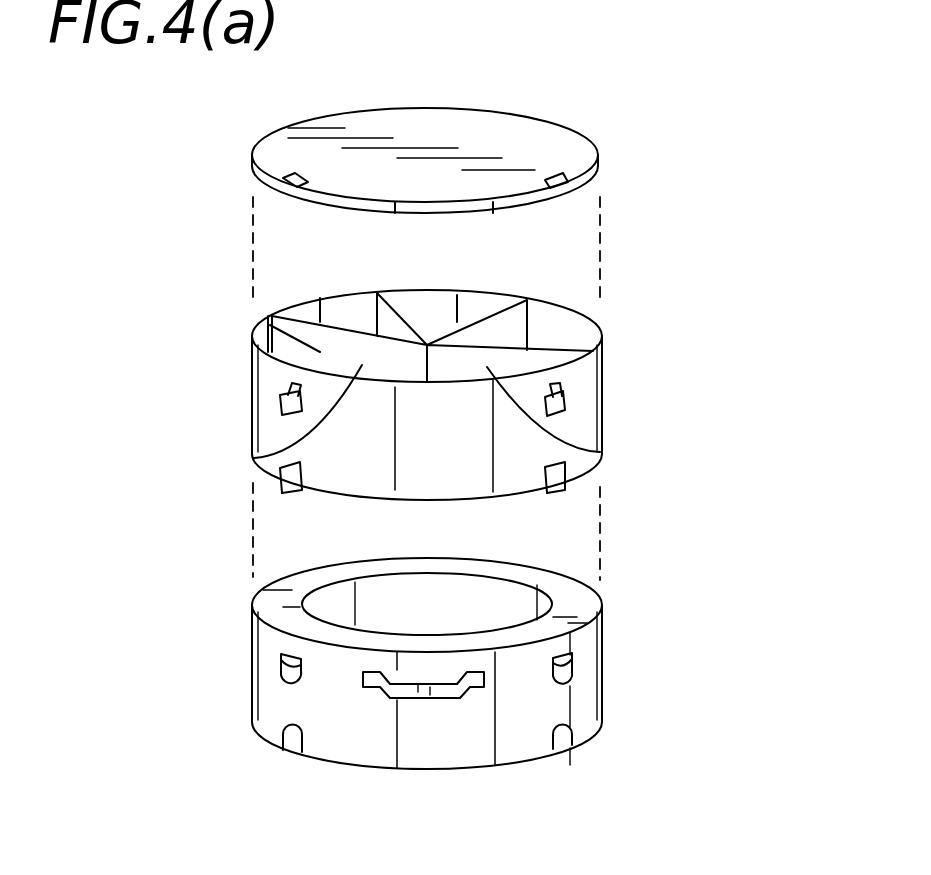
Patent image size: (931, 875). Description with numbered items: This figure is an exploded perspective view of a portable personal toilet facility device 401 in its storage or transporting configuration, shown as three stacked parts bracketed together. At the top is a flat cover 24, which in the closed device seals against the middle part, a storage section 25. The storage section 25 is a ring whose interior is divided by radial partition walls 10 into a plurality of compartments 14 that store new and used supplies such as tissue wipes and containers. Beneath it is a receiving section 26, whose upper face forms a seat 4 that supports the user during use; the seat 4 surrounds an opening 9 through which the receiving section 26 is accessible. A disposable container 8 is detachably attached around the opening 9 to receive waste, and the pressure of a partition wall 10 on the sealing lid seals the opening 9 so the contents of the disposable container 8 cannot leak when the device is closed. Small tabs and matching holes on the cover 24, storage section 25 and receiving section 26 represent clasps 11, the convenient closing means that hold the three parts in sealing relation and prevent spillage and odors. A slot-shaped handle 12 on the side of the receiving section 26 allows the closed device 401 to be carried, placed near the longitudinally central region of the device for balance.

The seat 4 is at (560, 613).
The disposable container 8 is at (360, 603).
The opening 9 is at (383, 597).
The partition wall 10 is at (265, 325).
The clasps 11 is at (300, 177).
The handle 12 is at (435, 698).
The compartments 14 is at (352, 310).
The cover 24 is at (286, 160).
The storage section 25 is at (273, 430).
The receiving section 26 is at (273, 700).
The portable personal toilet facility device 401 is at (735, 811).